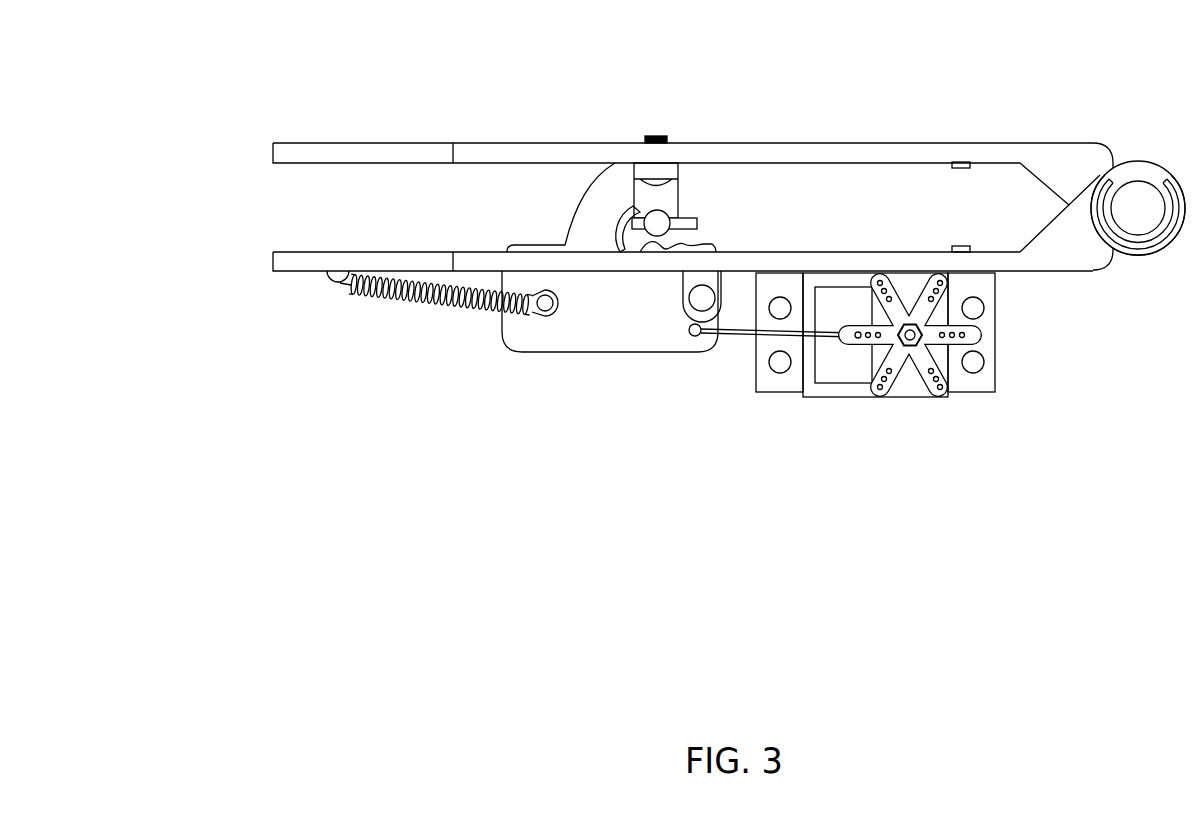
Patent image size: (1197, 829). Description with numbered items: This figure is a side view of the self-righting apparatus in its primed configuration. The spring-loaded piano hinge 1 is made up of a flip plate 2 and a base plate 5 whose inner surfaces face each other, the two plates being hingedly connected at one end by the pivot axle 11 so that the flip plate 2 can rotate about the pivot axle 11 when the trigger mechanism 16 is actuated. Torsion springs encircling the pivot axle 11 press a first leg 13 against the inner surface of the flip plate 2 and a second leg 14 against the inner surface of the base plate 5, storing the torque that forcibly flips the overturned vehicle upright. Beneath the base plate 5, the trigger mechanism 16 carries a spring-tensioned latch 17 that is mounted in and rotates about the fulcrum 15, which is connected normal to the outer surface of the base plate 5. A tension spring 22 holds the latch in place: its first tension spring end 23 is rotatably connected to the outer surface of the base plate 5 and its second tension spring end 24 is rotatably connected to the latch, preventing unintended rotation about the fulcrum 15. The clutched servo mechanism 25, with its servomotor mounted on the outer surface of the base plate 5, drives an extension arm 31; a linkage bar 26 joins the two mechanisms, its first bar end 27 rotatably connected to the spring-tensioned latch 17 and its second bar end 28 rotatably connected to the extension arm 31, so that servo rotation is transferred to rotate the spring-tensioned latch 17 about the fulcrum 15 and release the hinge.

The spring-loaded piano hinge 1 is at (213, 70).
The flip plate 2 is at (385, 147).
The base plate 5 is at (276, 267).
The pivot axle 11 is at (1155, 223).
The first leg 13 is at (985, 168).
The second leg 14 is at (992, 250).
The fulcrum 15 is at (688, 292).
The trigger mechanism 16 is at (520, 388).
The spring-tensioned latch 17 is at (585, 215).
The tension spring 22 is at (413, 337).
The first tension spring end 23 is at (345, 292).
The second tension spring end 24 is at (556, 312).
The clutched servo mechanism 25 is at (820, 458).
The linkage bar 26 is at (738, 350).
The first bar end 27 is at (690, 332).
The second bar end 28 is at (852, 347).
The extension arm 31 is at (855, 333).